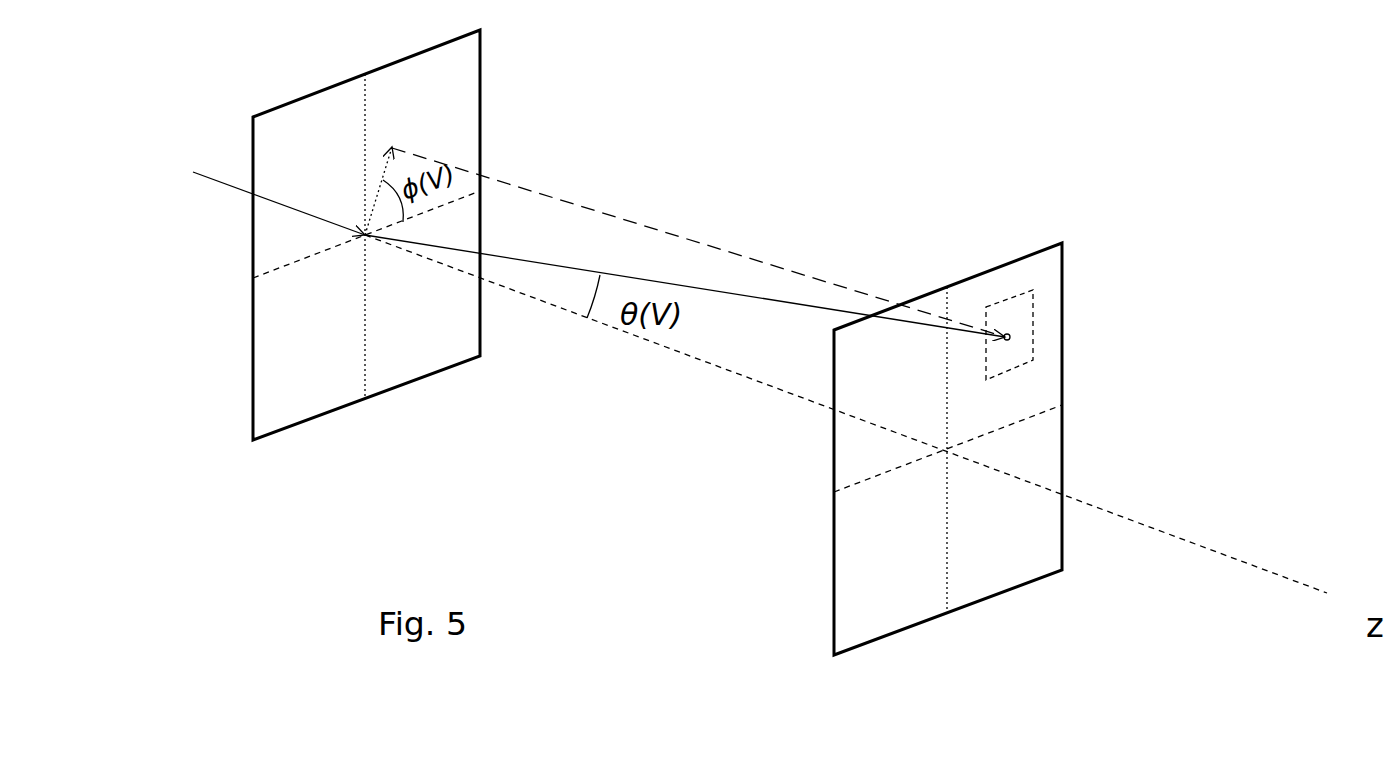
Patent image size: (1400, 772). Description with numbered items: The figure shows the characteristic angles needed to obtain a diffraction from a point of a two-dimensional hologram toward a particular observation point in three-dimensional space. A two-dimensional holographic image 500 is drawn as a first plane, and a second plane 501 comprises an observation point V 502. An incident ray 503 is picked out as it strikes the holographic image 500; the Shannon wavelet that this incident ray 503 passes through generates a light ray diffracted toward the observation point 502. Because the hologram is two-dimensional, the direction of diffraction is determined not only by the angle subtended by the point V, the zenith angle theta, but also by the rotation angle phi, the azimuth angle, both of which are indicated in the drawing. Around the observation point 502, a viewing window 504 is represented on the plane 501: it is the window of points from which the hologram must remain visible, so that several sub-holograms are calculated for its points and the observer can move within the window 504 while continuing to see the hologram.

The two-dimensional holographic image 500 is at (248, 420).
The plane 501 is at (838, 625).
The observation point V 502 is at (1035, 360).
The incident ray 503 is at (193, 172).
The viewing window 504 is at (1012, 297).